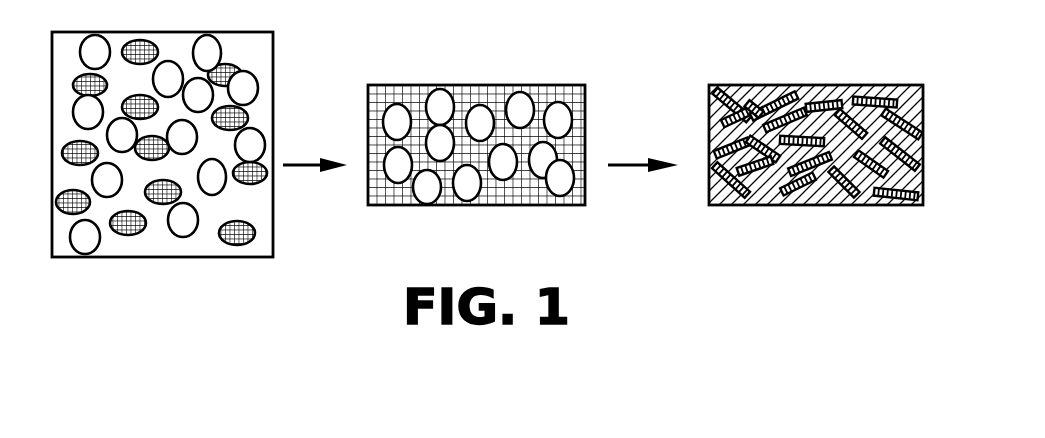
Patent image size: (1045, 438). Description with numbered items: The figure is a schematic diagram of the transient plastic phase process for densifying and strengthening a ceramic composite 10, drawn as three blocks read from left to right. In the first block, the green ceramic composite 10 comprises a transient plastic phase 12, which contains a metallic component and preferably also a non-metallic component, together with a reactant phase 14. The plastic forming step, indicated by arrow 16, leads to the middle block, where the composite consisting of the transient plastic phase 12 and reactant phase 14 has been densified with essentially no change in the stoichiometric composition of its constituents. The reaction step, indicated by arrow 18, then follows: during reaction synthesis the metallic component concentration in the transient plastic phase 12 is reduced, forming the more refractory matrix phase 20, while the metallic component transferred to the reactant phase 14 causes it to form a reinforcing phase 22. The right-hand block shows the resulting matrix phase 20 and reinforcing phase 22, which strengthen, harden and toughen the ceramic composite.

The ceramic composite 10 is at (213, 268).
The transient plastic phase 12 is at (120, 236).
The reactant phase 14 is at (213, 56).
The plastic forming step arrow 16 is at (296, 164).
The reaction step arrow 18 is at (625, 165).
The matrix phase 20 is at (827, 196).
The reinforcing phase 22 is at (783, 96).